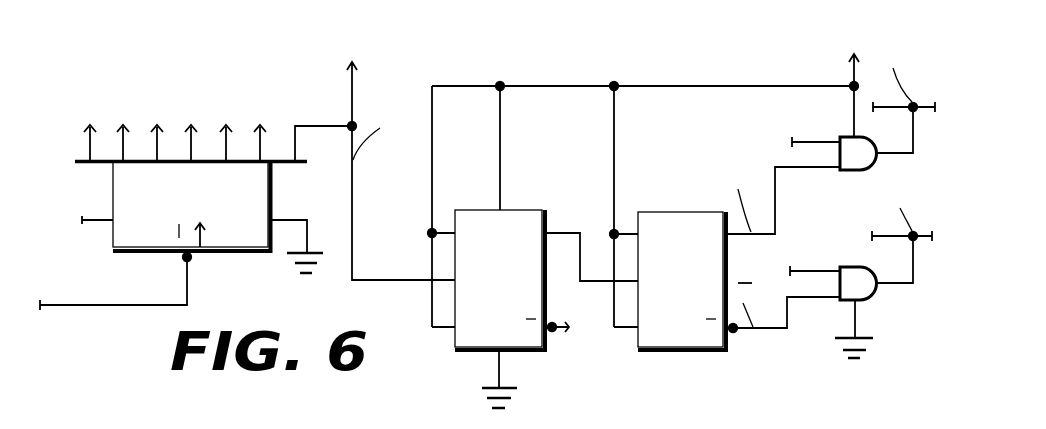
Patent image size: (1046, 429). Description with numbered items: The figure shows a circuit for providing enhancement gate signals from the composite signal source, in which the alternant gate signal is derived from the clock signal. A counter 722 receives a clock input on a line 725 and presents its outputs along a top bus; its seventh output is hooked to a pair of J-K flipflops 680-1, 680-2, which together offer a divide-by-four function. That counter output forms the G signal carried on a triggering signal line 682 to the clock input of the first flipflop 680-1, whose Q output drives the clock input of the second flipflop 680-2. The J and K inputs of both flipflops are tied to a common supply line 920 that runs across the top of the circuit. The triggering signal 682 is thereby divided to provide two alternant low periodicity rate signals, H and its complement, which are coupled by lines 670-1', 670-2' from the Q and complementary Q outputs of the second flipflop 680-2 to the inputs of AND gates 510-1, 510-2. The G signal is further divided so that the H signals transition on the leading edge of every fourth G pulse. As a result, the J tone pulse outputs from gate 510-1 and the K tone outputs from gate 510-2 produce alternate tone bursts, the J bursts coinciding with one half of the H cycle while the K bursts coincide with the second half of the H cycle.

The counter 722 is at (203, 230).
The clock input line 725 is at (122, 307).
The triggering signal 682 is at (408, 282).
The supply/bus line 920 is at (763, 83).
The J-K flipflop 680-1 is at (521, 222).
The J-K flipflop 680-2 is at (685, 215).
The line 670-1' is at (761, 177).
The line 670-2' is at (789, 333).
The AND gate 510-1 is at (857, 170).
The AND gate 510-2 is at (865, 288).